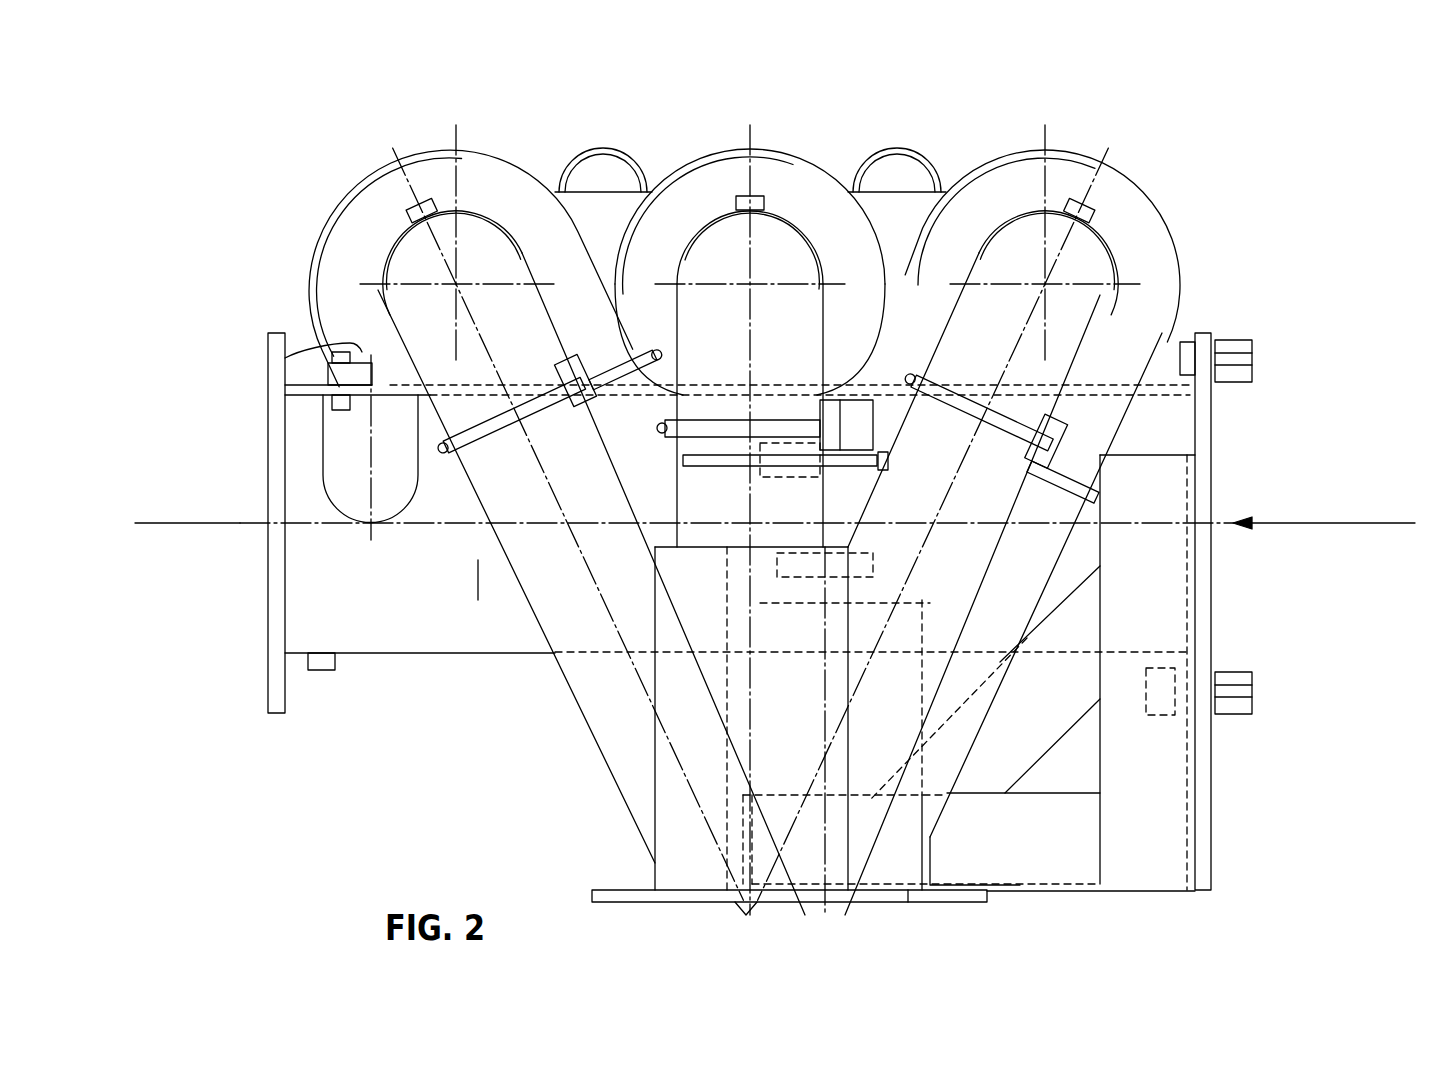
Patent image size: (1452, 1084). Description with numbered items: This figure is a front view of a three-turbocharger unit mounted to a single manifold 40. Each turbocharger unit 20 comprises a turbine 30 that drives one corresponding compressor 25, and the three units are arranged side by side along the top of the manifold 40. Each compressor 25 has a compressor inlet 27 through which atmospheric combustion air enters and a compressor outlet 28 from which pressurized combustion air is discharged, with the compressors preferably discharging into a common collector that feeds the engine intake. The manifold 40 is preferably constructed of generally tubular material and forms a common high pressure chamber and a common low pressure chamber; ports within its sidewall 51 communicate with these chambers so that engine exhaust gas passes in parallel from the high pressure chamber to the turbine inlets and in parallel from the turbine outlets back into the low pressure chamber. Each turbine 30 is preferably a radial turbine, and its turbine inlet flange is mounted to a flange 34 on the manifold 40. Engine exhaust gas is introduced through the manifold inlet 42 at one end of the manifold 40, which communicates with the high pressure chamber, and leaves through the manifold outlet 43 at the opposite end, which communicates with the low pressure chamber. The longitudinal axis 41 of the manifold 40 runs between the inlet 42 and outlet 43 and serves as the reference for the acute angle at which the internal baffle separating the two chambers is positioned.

The separator unit 20 is at (742, 487).
The compressor 25 is at (525, 165).
The compressor inlet 27 is at (490, 235).
The compressor outlet 28 is at (370, 235).
The turbine 30 is at (305, 285).
The flange 34 is at (330, 345).
The manifold 40 is at (422, 655).
The longitudinal axis 41 is at (166, 521).
The manifold inlet 42 is at (1215, 602).
The manifold outlet 43 is at (268, 600).
The sidewall 51 is at (478, 600).